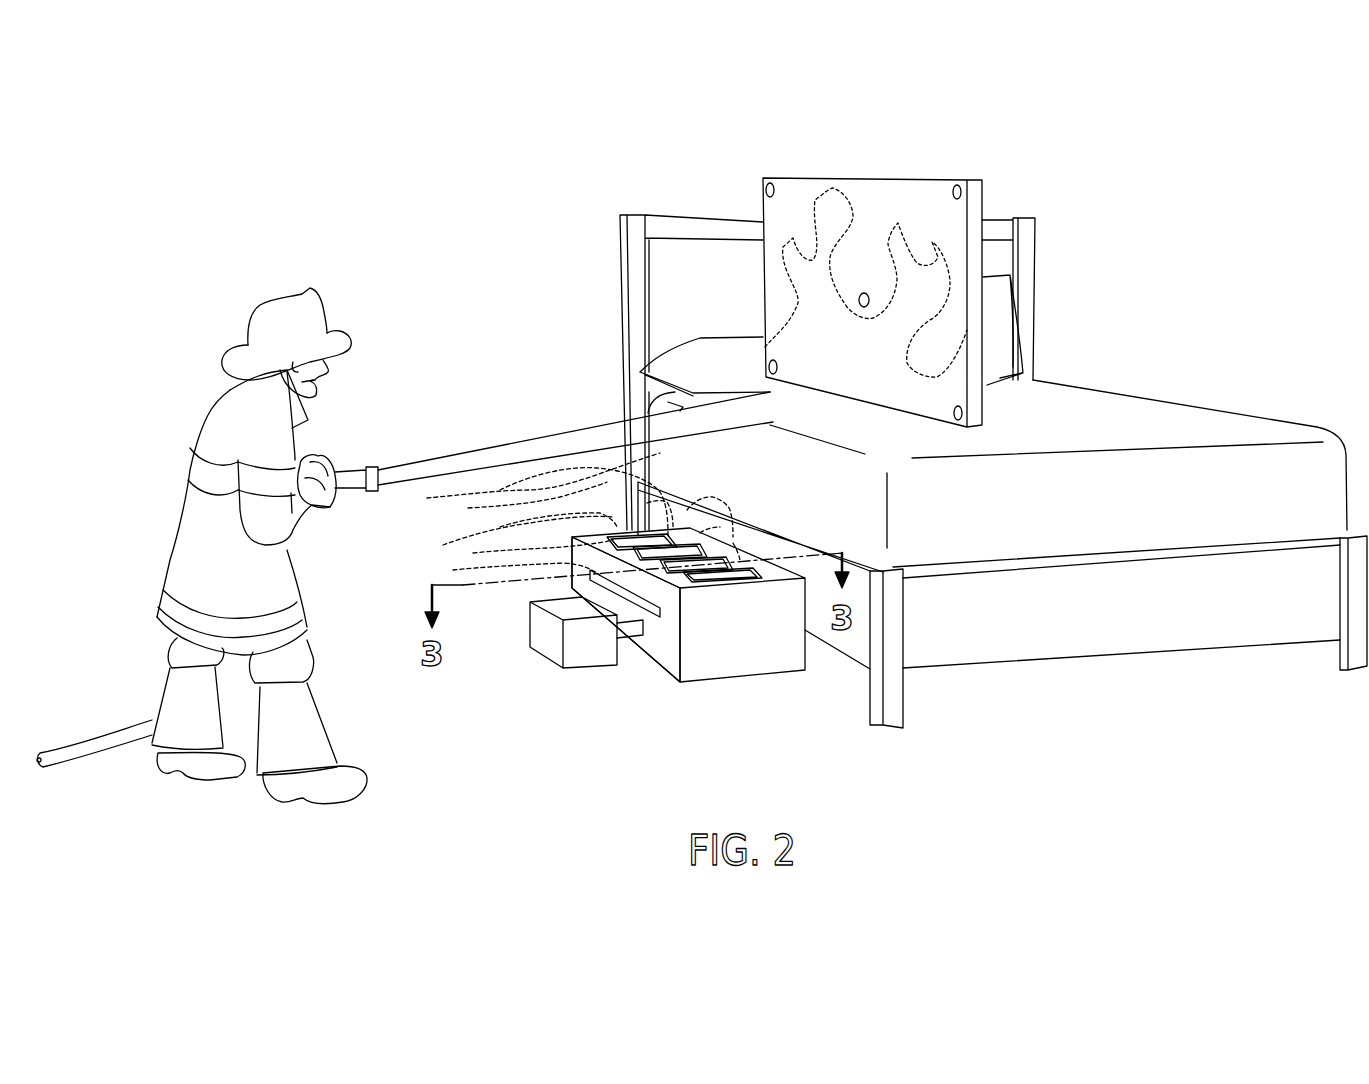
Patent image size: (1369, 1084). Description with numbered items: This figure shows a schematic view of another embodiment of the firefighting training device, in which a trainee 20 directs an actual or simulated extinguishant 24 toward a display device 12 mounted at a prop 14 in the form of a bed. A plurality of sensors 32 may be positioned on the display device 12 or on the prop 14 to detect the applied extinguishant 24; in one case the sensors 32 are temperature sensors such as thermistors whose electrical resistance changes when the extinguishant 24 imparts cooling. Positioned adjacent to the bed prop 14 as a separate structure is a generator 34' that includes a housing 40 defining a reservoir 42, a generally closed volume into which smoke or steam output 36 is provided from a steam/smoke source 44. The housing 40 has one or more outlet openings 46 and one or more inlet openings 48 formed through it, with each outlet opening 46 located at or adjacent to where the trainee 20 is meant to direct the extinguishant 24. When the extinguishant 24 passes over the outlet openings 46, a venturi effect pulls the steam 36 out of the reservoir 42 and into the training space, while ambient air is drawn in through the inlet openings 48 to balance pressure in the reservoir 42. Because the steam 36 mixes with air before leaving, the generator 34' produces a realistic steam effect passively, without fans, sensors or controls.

The display device 12 is at (810, 187).
The prop 14 is at (1154, 417).
The trainee 20 is at (175, 500).
The extinguishant 24 is at (530, 438).
The sensors 32 is at (862, 292).
The generator 34' is at (654, 595).
The steam 36 is at (480, 492).
The housing 40 is at (705, 668).
The reservoir 42 is at (667, 643).
The steam/smoke source 44 is at (553, 650).
The outlet openings 46 is at (682, 550).
The inlet openings 48 is at (662, 608).